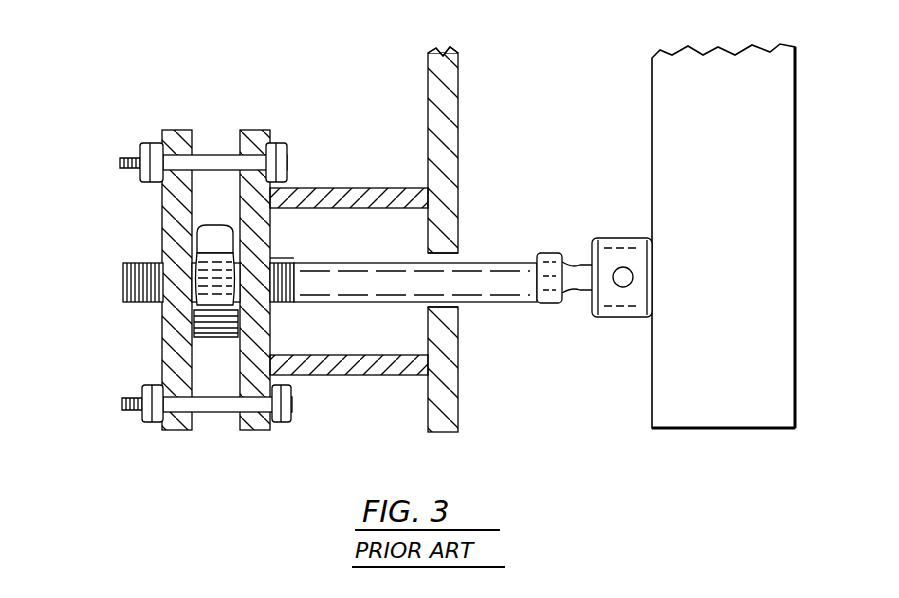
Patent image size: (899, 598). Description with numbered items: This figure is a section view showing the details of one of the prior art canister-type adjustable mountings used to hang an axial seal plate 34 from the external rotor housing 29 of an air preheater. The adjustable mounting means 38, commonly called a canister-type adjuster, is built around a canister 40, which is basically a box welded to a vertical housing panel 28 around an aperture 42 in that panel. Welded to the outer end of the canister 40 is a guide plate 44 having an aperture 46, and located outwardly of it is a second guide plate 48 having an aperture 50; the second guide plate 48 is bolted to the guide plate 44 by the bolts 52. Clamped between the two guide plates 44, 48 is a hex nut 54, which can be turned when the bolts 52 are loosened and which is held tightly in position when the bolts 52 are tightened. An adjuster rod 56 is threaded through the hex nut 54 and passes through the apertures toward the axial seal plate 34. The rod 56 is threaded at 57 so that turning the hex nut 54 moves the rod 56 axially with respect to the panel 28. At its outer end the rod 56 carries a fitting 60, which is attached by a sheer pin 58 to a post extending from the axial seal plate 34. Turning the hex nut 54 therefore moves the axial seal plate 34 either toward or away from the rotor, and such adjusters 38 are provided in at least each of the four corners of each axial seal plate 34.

The vertical housing panel 28 is at (458, 118).
The external rotor housing 29 is at (440, 52).
The axial seal plate 34 is at (745, 234).
The adjustable mounting means 38 is at (120, 349).
The canister 40 is at (348, 188).
The aperture 42 is at (452, 258).
The guide plate 44 is at (248, 132).
The aperture 46 is at (268, 304).
The second guide plate 48 is at (178, 132).
The aperture 50 is at (165, 305).
The bolt 52 is at (210, 158).
The hex nut 54 is at (215, 238).
The adjuster rod 56 is at (490, 300).
The threaded portion 57 is at (280, 262).
The sheer pin 58 is at (623, 287).
The fitting 60 is at (625, 238).